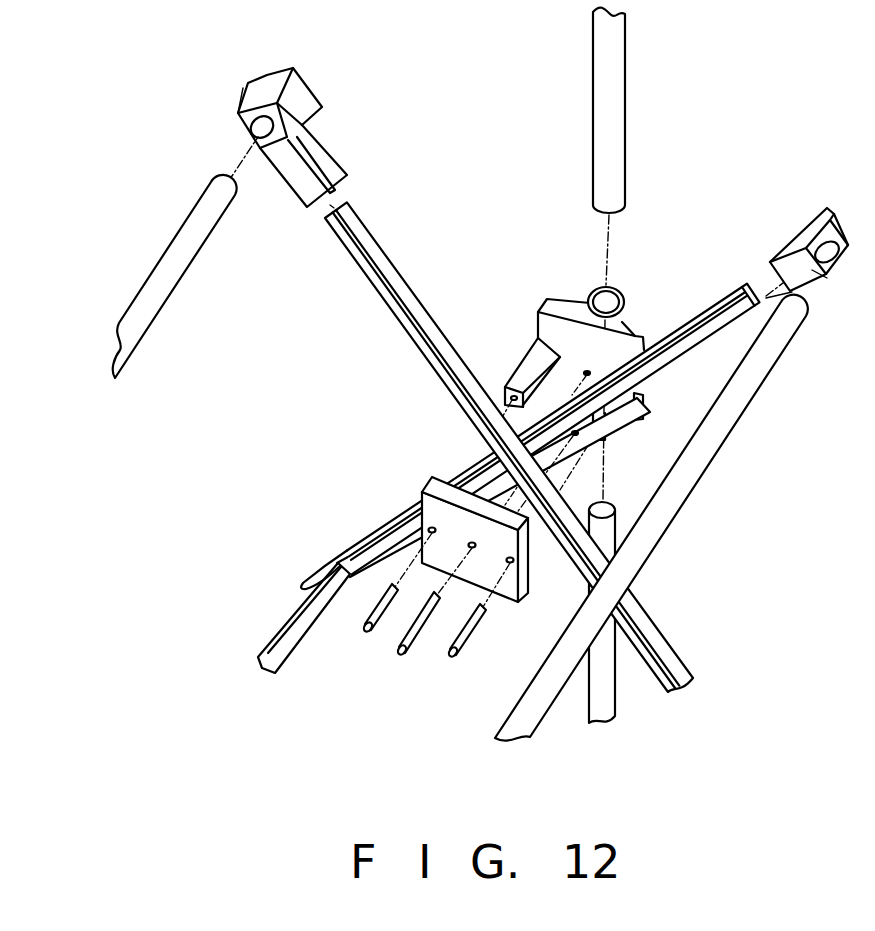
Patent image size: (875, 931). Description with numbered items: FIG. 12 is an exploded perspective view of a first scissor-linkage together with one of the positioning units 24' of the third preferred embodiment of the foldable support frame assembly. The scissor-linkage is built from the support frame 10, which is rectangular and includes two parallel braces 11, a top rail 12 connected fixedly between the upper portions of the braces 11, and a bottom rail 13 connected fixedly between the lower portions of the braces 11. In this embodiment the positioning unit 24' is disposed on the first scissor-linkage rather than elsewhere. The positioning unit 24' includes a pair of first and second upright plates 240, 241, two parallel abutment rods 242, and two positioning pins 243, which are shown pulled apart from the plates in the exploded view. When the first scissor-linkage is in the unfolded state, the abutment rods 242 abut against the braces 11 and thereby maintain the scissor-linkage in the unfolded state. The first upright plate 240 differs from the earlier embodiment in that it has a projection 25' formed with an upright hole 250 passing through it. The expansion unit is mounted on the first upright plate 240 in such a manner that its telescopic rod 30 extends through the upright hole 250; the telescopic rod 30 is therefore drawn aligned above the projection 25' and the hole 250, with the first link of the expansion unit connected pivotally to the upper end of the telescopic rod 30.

The support frame 10 is at (386, 236).
The brace 11 is at (687, 340).
The top rail 12 is at (675, 480).
The bottom rail 13 is at (290, 639).
The telescopic rod 30 is at (603, 116).
The first upright plate 240 is at (558, 312).
The second upright plate 241 is at (423, 517).
The abutment rod 242 is at (530, 374).
The positioning pin 243 is at (452, 657).
The upright hole 250 is at (597, 300).
The positioning unit 24' is at (778, 214).
The projection 25' is at (716, 204).